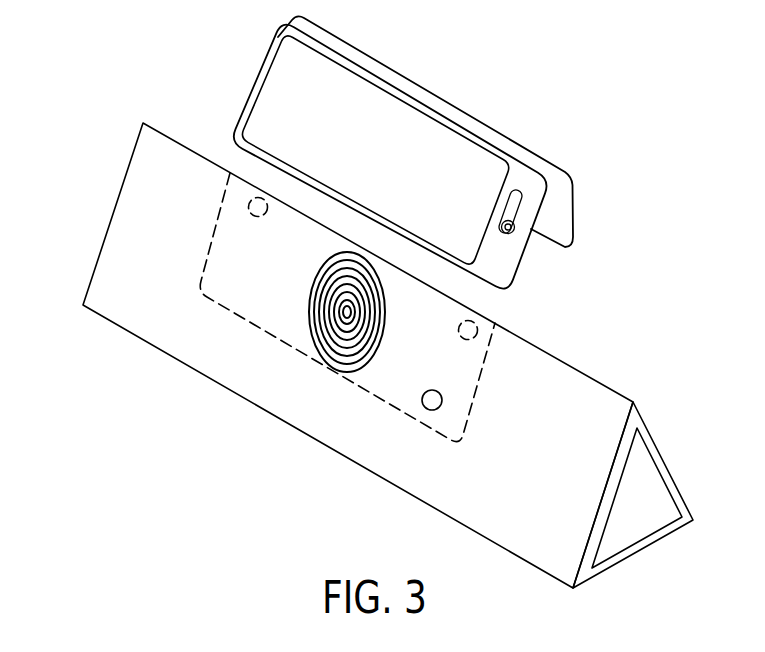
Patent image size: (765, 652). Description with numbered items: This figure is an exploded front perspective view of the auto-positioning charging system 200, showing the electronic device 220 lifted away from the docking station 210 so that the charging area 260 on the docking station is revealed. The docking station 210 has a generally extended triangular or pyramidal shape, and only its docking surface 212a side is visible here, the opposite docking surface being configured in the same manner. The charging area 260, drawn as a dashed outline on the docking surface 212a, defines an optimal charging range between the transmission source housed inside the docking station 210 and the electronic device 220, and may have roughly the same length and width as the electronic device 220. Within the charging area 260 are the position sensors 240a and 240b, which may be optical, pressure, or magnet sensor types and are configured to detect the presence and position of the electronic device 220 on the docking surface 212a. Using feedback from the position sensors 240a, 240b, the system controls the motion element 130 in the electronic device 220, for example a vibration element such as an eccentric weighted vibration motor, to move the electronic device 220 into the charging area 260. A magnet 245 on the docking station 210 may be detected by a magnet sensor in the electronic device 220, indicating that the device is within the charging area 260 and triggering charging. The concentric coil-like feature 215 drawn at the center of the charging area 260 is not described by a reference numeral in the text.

The charging system 200 is at (670, 76).
The docking station 210 is at (130, 160).
The docking surface 212a is at (107, 277).
The electronic device 220 is at (497, 133).
The motion element 130 is at (533, 207).
The coil 215 is at (308, 318).
The position sensor 240a is at (478, 331).
The position sensor 240b is at (254, 217).
The magnet 245 is at (442, 403).
The charging area 260 is at (267, 337).